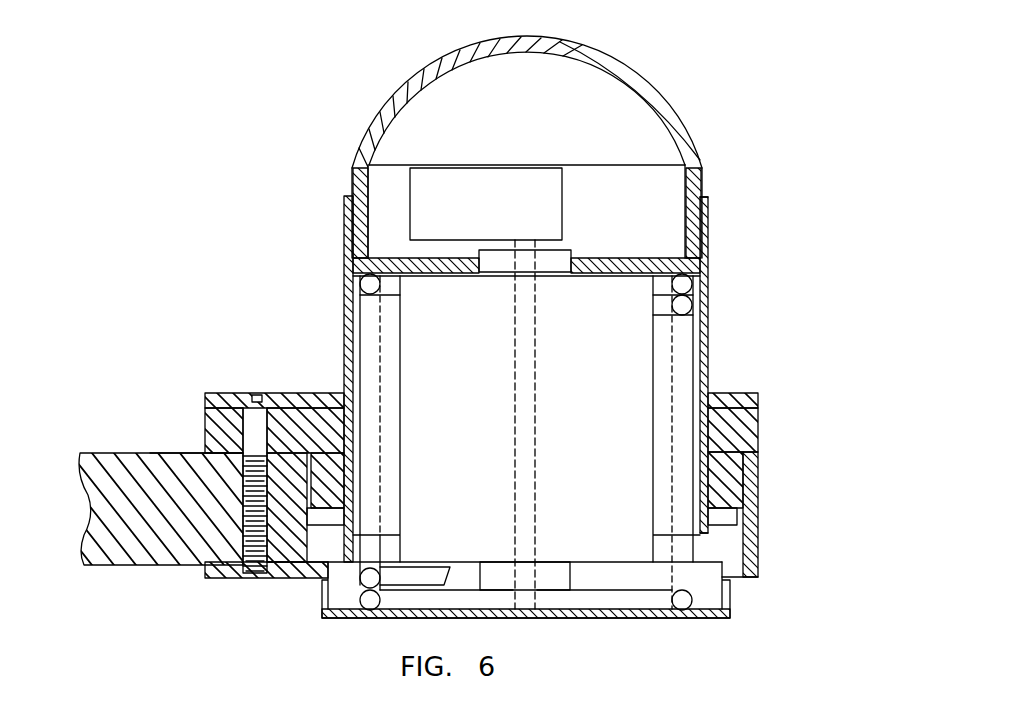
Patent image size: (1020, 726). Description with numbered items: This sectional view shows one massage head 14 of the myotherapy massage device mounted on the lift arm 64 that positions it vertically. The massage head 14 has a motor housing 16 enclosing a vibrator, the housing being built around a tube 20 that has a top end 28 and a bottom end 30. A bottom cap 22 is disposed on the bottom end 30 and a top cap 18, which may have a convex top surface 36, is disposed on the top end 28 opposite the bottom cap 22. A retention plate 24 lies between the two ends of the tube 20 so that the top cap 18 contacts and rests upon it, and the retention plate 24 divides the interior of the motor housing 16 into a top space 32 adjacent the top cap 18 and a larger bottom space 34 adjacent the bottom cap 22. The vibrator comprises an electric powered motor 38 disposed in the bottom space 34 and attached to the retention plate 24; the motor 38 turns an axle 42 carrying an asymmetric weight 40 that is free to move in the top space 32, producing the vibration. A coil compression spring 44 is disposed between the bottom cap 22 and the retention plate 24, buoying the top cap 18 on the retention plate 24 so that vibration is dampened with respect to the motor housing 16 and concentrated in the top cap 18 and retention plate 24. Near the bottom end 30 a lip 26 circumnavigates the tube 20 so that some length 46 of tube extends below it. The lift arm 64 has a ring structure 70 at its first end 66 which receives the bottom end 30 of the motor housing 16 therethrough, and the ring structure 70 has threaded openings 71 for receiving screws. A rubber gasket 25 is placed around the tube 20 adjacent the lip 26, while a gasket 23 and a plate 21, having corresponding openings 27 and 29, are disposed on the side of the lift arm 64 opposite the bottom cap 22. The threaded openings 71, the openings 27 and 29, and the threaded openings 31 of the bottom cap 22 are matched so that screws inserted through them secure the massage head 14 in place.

The massage head 14 is at (262, 173).
The motor housing 16 is at (750, 218).
The top cap 18 is at (662, 97).
The tube 20 is at (708, 285).
The plate 21 is at (722, 396).
The bottom cap 22 is at (732, 595).
The gasket 23 is at (750, 436).
The retention plate 24 is at (675, 257).
The rubber gasket 25 is at (750, 485).
The lip 26 is at (750, 500).
The opening 27 is at (230, 426).
The top end 28 is at (702, 196).
The opening 29 is at (252, 397).
The bottom end 30 is at (685, 537).
The threaded opening 31 is at (255, 575).
The top space 32 is at (385, 233).
The bottom space 34 is at (387, 392).
The convex top surface 36 is at (502, 37).
The motor 38 is at (420, 328).
The asymmetric weight 40 is at (540, 196).
The axle 42 is at (515, 338).
The coil compression spring 44 is at (690, 305).
The length of tube 46 is at (712, 530).
The lift arm 64 is at (150, 555).
The first end 66 is at (160, 462).
The ring structure 70 is at (755, 470).
The threaded opening 71 is at (270, 528).